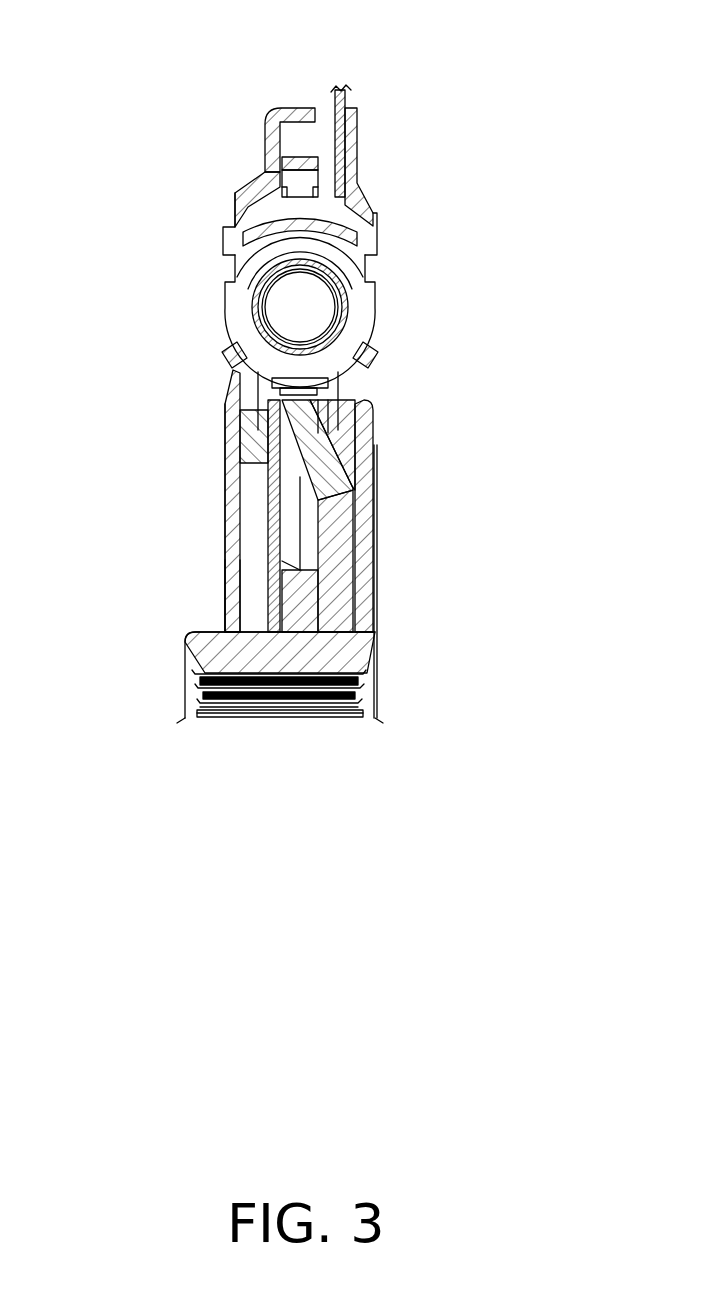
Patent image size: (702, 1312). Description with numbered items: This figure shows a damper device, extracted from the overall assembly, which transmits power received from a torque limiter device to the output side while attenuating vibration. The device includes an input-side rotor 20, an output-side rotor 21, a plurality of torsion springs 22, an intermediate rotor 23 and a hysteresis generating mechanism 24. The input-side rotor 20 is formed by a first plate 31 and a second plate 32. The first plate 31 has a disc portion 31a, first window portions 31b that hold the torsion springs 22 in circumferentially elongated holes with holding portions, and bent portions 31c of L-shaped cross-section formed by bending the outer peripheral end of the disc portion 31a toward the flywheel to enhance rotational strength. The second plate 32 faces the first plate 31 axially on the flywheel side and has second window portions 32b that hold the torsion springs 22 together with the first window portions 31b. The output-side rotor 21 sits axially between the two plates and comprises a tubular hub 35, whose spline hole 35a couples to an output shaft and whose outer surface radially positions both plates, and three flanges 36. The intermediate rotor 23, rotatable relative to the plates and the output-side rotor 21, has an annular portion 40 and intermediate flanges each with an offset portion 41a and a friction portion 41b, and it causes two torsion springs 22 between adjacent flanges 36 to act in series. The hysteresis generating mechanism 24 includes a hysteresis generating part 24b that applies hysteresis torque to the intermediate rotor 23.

The input-side rotor 20 is at (210, 548).
The output-side rotor 21 is at (186, 682).
The torsion springs 22 is at (363, 270).
The intermediate rotor 23 is at (348, 489).
The hysteresis generating mechanism 24 is at (255, 474).
The hysteresis generating part 24b is at (280, 463).
The first plate 31 is at (225, 423).
The disc portion 31a is at (233, 588).
The first window portions 31b is at (227, 346).
The bent portions 31c is at (300, 108).
The second plate 32 is at (358, 167).
The second window portions 32b is at (366, 351).
The hub 35 is at (366, 640).
The spline hole 35a is at (340, 718).
The flanges 36 is at (337, 610).
The annular portion 40 is at (308, 588).
The offset portion 41a is at (374, 436).
The friction portion 41b is at (371, 400).